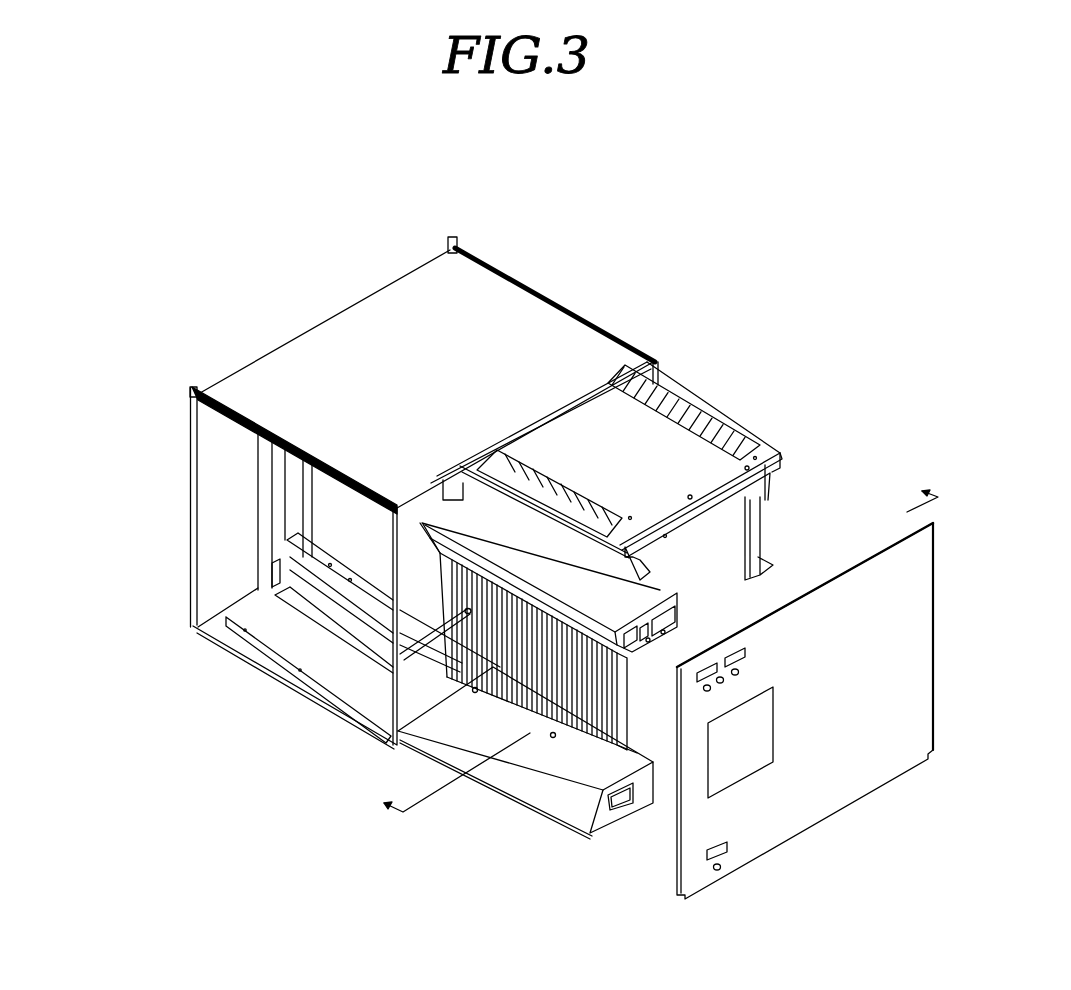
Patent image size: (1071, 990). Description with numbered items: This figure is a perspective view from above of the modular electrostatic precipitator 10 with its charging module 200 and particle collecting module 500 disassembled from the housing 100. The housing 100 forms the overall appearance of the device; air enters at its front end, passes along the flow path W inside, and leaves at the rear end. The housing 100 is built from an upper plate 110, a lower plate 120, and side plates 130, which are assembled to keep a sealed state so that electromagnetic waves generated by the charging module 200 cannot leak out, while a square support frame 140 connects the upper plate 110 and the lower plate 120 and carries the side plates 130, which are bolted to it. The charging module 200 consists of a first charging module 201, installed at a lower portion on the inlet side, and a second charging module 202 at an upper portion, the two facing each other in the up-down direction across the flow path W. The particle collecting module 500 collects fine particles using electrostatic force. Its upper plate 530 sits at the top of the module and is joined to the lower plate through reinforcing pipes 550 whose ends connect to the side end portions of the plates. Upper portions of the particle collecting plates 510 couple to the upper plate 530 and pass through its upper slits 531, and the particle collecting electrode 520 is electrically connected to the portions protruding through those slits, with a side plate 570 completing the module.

The modular electrostatic precipitator 10 is at (553, 198).
The flow path W is at (231, 499).
The housing 100 is at (860, 263).
The upper plate 110 is at (440, 477).
The lower plate 120 is at (622, 358).
The side plates 130 is at (870, 573).
The support frame 140 is at (665, 385).
The charging module 200 is at (650, 932).
The first charging module 201 is at (580, 655).
The second charging module 202 is at (625, 603).
The particle collecting module 500 is at (108, 638).
The particle collecting plate 510 is at (493, 633).
The particle collecting electrode 520 is at (467, 566).
The upper plate 530 is at (505, 515).
The upper slits 531 is at (458, 498).
The reinforcing pipe 550 is at (617, 698).
The side plate 570 is at (523, 650).